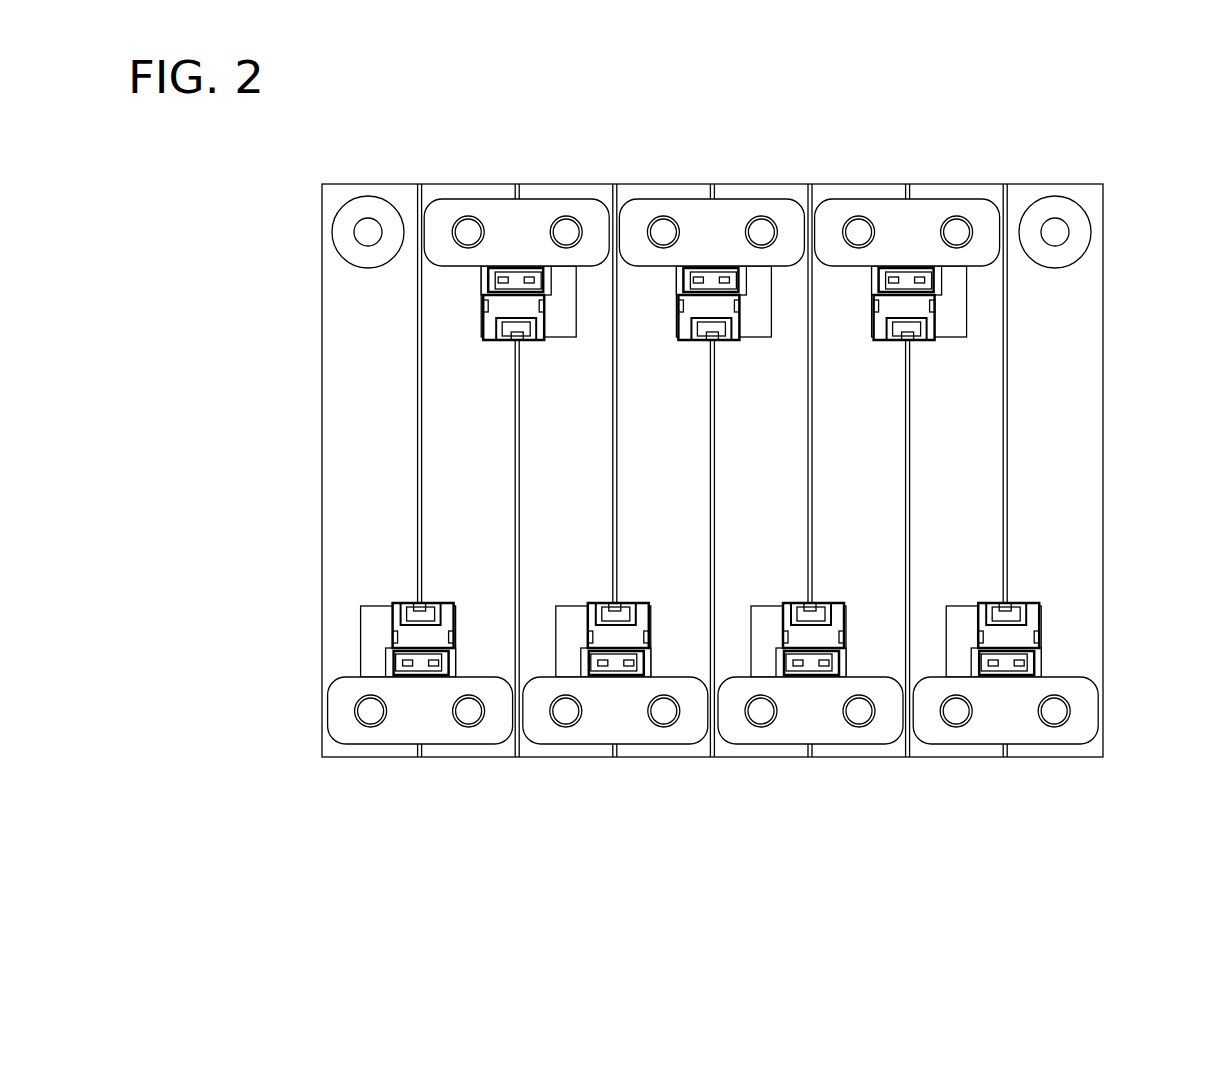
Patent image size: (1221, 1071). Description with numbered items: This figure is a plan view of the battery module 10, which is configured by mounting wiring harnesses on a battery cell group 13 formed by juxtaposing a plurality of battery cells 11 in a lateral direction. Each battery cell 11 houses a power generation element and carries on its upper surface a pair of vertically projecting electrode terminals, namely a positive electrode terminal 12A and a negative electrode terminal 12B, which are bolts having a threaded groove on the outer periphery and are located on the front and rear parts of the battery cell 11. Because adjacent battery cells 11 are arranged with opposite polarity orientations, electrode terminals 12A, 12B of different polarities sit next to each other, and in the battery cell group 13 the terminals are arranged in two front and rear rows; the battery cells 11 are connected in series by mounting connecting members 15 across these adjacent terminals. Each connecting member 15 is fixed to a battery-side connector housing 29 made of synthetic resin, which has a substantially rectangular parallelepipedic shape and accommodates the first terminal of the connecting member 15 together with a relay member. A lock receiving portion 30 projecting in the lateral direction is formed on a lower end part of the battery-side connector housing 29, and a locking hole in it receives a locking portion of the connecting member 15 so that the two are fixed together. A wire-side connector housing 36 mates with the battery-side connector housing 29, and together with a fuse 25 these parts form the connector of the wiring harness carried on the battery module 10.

The battery module 10 is at (1106, 181).
The battery cell 11 is at (335, 483).
The positive electrode terminal 12A is at (1057, 717).
The negative electrode terminal 12B is at (957, 714).
The battery cell group 13 is at (1108, 427).
The connecting member 15 is at (1027, 728).
The fuse 25 is at (508, 281).
The battery-side connector housing 29 is at (562, 333).
The lock receiving portion 30 is at (365, 645).
The wire-side connector housing 36 is at (502, 308).